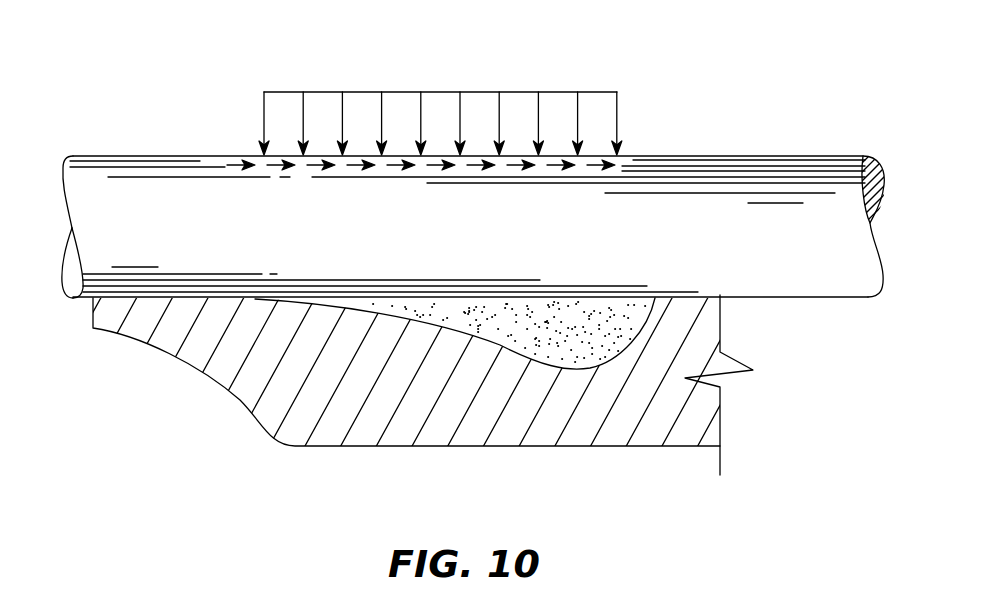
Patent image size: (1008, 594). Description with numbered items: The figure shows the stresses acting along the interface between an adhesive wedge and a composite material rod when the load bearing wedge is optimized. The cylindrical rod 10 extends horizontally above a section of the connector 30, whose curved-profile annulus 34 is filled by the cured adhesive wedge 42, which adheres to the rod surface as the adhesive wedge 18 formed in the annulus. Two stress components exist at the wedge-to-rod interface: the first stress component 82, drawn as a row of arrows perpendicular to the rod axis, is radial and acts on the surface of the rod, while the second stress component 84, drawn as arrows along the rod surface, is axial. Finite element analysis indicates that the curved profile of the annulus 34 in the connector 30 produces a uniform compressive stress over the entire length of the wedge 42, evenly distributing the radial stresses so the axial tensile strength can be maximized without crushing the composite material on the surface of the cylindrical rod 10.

The cylindrical rod 10 is at (805, 163).
The adhesive wedge 18 is at (630, 313).
The connector 30 is at (320, 447).
The annulus 34 is at (490, 338).
The wedge 42 is at (603, 352).
The first stress component 82 is at (437, 90).
The second stress component 84 is at (550, 167).